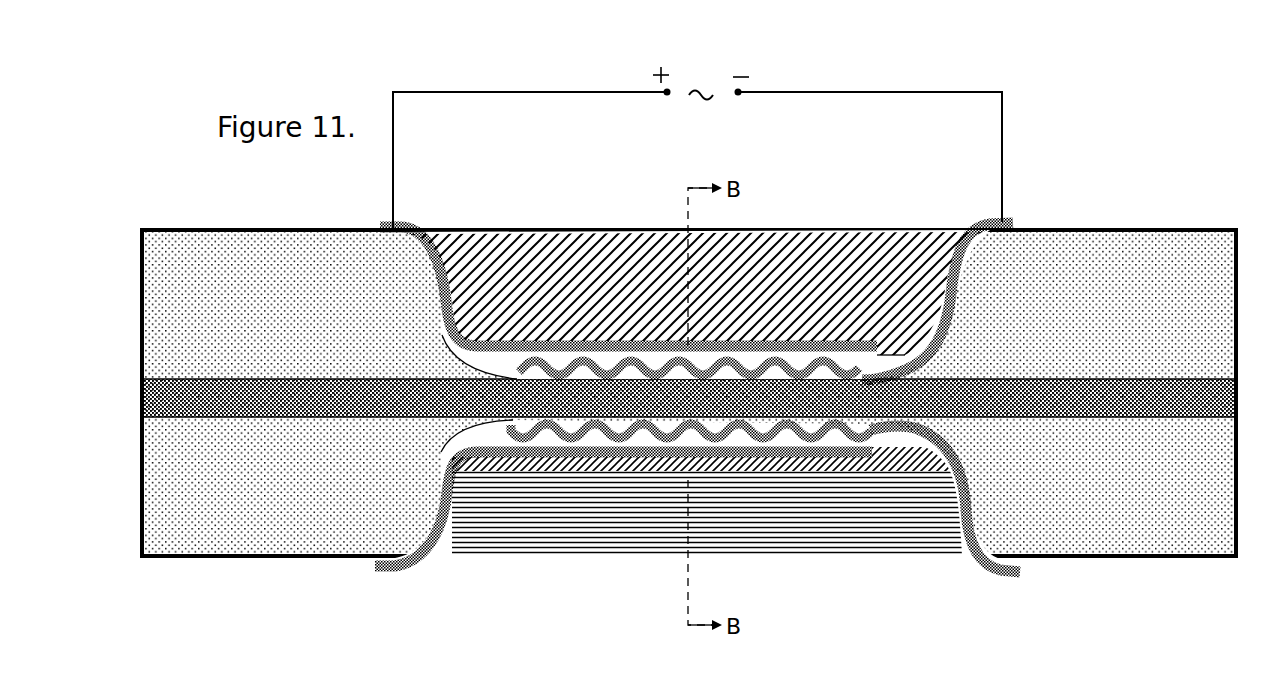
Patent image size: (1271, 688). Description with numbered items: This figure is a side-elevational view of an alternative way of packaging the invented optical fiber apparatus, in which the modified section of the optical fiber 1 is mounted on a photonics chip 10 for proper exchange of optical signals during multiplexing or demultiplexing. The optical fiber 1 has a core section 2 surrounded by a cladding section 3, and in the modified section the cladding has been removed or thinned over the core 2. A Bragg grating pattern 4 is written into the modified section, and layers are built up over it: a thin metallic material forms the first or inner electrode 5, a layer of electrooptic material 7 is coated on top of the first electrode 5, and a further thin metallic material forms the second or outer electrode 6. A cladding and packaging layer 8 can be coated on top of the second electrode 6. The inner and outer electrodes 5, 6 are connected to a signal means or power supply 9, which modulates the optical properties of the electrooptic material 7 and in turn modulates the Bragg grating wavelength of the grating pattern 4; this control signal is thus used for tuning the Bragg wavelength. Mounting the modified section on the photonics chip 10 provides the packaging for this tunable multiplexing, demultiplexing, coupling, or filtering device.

The optical fiber 1 is at (1070, 230).
The core section 2 is at (1153, 400).
The cladding section 3 is at (639, 378).
The Bragg grating pattern 4 is at (785, 435).
The first electrode 5 is at (995, 575).
The second electrode 6 is at (381, 568).
The electrooptic material 7 is at (653, 437).
The cladding and packaging layer 8 is at (514, 292).
The power supply 9 is at (702, 82).
The photonics chip 10 is at (519, 520).